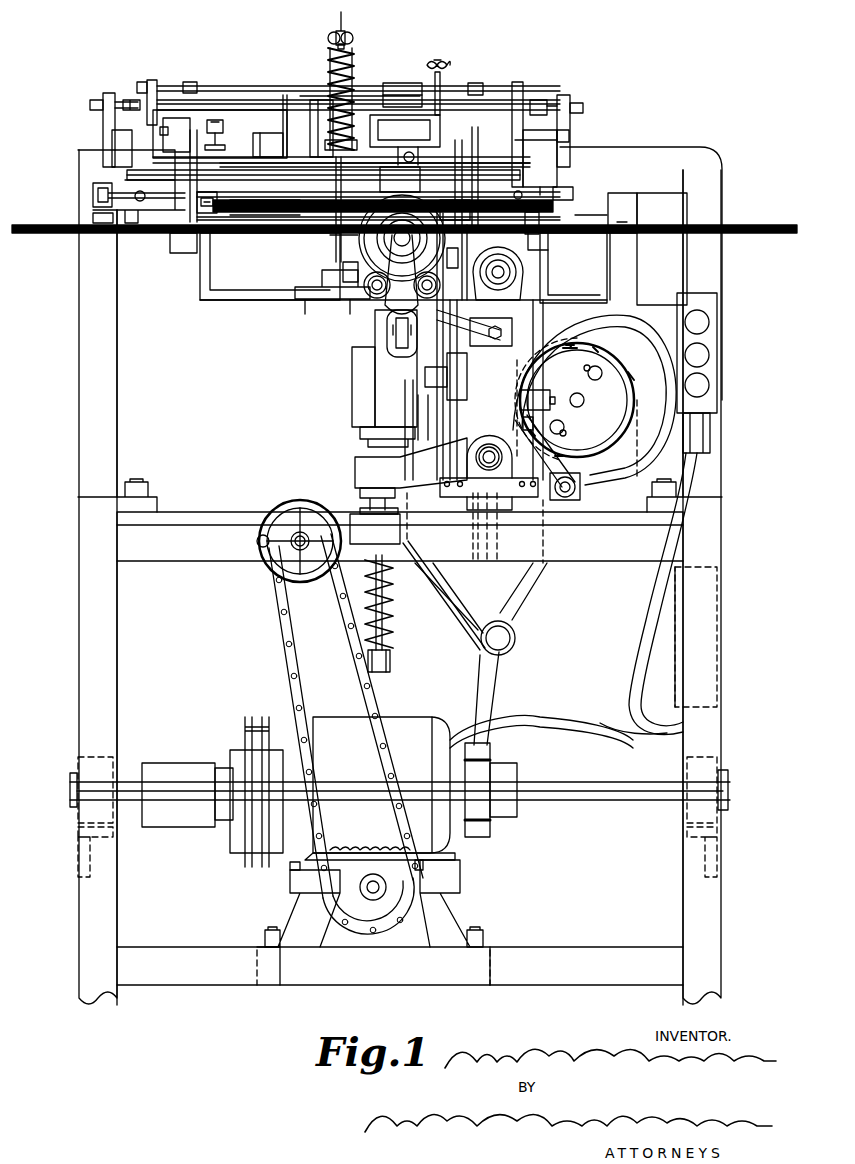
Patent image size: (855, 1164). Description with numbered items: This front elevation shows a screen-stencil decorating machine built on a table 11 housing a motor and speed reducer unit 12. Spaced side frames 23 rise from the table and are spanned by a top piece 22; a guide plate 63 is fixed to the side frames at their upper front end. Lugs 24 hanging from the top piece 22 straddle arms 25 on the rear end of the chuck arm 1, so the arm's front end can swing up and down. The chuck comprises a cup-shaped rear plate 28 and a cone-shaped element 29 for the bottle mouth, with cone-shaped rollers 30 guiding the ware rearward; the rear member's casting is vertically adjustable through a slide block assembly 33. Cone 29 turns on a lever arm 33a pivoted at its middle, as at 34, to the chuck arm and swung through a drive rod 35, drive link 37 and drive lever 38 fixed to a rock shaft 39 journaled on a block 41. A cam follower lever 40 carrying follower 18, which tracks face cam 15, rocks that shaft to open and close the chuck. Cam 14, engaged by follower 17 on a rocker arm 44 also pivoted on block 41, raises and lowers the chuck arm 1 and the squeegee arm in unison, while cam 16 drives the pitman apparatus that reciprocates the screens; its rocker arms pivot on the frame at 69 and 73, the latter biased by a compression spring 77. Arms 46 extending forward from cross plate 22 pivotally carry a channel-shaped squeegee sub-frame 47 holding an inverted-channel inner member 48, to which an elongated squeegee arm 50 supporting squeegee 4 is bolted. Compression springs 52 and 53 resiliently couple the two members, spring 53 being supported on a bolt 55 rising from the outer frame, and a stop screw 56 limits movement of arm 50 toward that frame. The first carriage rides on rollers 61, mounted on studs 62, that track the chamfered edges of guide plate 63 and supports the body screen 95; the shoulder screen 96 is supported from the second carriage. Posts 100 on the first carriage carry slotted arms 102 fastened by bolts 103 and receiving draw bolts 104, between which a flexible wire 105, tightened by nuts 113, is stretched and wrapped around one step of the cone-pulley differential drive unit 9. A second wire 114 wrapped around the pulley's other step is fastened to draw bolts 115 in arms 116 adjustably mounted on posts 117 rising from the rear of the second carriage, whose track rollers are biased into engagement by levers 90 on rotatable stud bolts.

The chuck arm 1 is at (243, 304).
The squeegee 4 is at (405, 131).
The differential drive unit 9 is at (412, 83).
The table 11 is at (340, 510).
The motor and speed reducer unit 12 is at (430, 718).
The cam 14 is at (616, 327).
The cam 15 is at (613, 437).
The cam 16 is at (640, 342).
The follower 17 is at (580, 490).
The follower 18 is at (520, 384).
The top piece 22 is at (670, 148).
The side frames 23 is at (79, 310).
The lugs 24 is at (170, 244).
The arms 25 is at (200, 280).
The rear plate 28 is at (367, 245).
The cone-shaped element 29 is at (370, 225).
The cone-shaped rollers 30 is at (372, 300).
The slide block assembly 33 is at (352, 370).
The lever arm 33a is at (385, 325).
The pivot 34 is at (390, 335).
The drive rod 35 is at (445, 312).
The drive link 37 is at (450, 386).
The drive lever 38 is at (446, 402).
The rock shaft 39 is at (498, 493).
The cam follower lever 40 is at (558, 412).
The block 41 is at (480, 445).
The rocker arm 44 is at (355, 465).
The arms 46 is at (266, 135).
The squeegee sub-frame 47 is at (286, 95).
The second squeegee member 48 is at (356, 106).
The squeegee arm 50 is at (400, 157).
The compression spring 52 is at (316, 106).
The compression spring 53 is at (324, 70).
The bolt 55 is at (340, 26).
The stop screw 56 is at (435, 60).
The rollers 61 is at (538, 252).
The studs 62 is at (538, 237).
The guide plate 63 is at (775, 224).
The pivot 69 is at (515, 638).
The pivot 73 is at (516, 270).
The compression spring 77 is at (390, 600).
The levers 90 is at (216, 124).
The body screen 95 is at (272, 216).
The shoulder screen 96 is at (266, 210).
The posts 100 is at (100, 168).
The arms 102 is at (569, 136).
The bolts 103 is at (560, 148).
The draw bolts 104 is at (540, 100).
The flexible wire 105 is at (270, 102).
The nuts 113 is at (570, 105).
The wire 114 is at (314, 98).
The draw bolts 115 is at (172, 78).
The arms 116 is at (158, 62).
The posts 117 is at (165, 131).